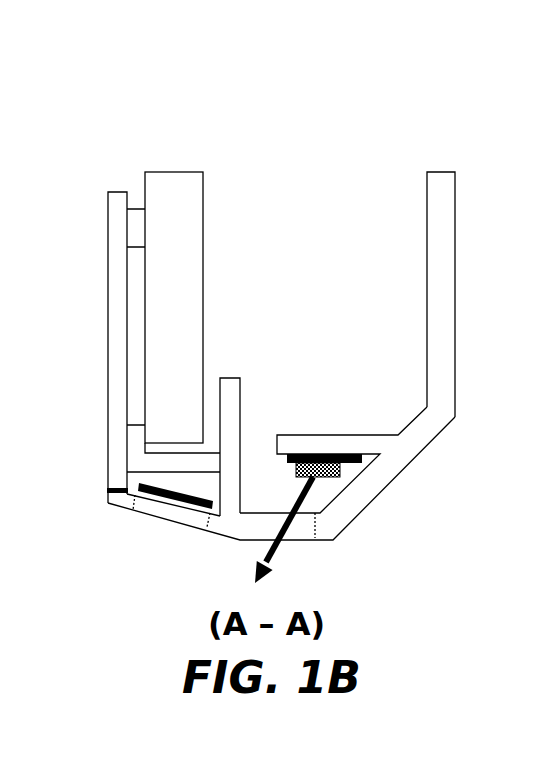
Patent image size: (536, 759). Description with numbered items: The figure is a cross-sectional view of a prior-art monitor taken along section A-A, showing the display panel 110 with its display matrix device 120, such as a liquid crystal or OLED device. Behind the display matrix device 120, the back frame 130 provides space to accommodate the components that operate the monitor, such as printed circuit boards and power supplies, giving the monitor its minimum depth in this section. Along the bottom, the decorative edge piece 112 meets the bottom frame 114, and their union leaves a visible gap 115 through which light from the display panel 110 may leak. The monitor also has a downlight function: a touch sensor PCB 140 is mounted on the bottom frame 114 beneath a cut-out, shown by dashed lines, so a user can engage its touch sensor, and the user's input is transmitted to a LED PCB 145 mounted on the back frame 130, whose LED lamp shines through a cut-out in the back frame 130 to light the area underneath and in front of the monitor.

The display panel 110 is at (282, 86).
The decorative edge piece 112 is at (108, 205).
The bottom frame 114 is at (108, 500).
The gap 115 is at (107, 490).
The display matrix device 120 is at (160, 172).
The back frame 130 is at (440, 172).
The touch sensor PCB 140 is at (166, 504).
The LED PCB 145 is at (352, 454).